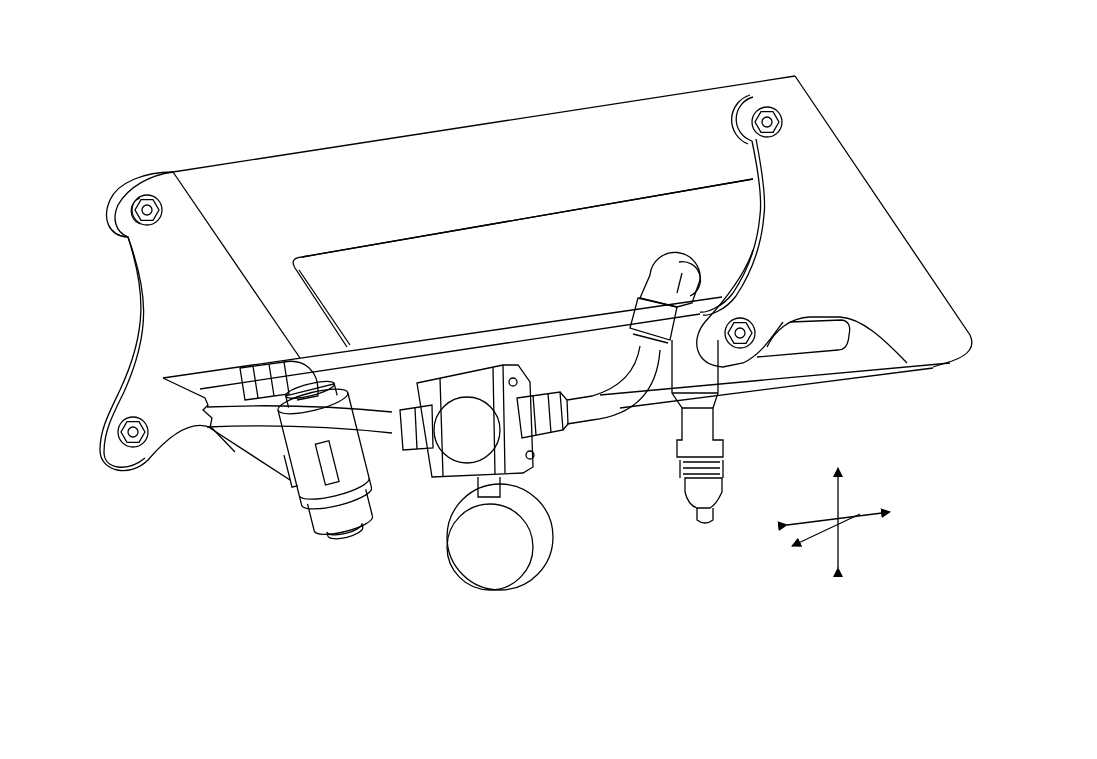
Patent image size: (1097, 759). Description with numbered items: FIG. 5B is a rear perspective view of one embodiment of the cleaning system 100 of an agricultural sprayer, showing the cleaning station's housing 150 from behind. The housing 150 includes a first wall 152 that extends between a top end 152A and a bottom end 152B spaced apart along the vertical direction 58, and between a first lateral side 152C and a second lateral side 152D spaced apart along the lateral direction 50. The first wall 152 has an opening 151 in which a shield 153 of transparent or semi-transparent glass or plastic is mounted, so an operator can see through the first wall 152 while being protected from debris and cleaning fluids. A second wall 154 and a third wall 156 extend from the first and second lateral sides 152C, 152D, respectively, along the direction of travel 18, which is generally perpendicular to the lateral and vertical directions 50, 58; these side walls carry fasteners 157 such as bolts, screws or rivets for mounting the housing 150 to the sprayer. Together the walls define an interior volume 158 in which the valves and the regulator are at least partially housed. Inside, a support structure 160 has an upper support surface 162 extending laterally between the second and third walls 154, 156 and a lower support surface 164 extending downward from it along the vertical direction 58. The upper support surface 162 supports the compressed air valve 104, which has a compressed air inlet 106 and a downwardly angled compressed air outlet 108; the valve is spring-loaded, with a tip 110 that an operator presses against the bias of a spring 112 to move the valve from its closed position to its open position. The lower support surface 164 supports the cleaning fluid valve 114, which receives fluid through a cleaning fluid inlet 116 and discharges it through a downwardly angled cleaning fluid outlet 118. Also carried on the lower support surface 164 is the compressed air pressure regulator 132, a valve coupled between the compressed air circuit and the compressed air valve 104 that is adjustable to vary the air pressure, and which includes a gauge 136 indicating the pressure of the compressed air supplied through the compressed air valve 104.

The wash fluid spray system 100 is at (152, 128).
The housing 150 is at (531, 116).
The opening 151 is at (513, 218).
The first wall 152 is at (443, 147).
The top end 152A is at (688, 91).
The bottom end 152B is at (884, 376).
The first lateral side 152C is at (856, 160).
The second lateral side 152D is at (244, 263).
The shield 153 is at (373, 262).
The second wall 154 is at (742, 110).
The third wall 156 is at (152, 183).
The fastener 157 is at (140, 213).
The interior volume 158 is at (274, 178).
The support structure 160 is at (442, 363).
The upper support surface 162 is at (503, 330).
The lower support surface 164 is at (571, 357).
The compressed air valve 104 is at (703, 422).
The compressed air inlet 106 is at (640, 322).
The compressed air outlet 108 is at (708, 527).
The tip 110 is at (694, 517).
The spring 112 is at (687, 463).
The cleaning fluid valve 114 is at (285, 461).
The cleaning fluid inlet 116 is at (250, 382).
The cleaning fluid outlet 118 is at (357, 528).
The compressed air pressure regulator 132 is at (484, 504).
The gauge 136 is at (490, 574).
The vertical direction 58 is at (840, 502).
The lateral direction 50 is at (858, 519).
The direction of travel 18 is at (813, 538).